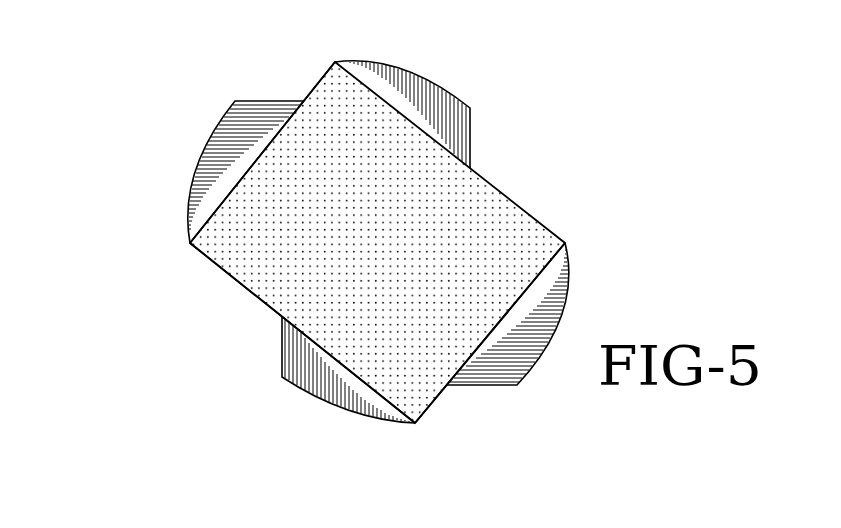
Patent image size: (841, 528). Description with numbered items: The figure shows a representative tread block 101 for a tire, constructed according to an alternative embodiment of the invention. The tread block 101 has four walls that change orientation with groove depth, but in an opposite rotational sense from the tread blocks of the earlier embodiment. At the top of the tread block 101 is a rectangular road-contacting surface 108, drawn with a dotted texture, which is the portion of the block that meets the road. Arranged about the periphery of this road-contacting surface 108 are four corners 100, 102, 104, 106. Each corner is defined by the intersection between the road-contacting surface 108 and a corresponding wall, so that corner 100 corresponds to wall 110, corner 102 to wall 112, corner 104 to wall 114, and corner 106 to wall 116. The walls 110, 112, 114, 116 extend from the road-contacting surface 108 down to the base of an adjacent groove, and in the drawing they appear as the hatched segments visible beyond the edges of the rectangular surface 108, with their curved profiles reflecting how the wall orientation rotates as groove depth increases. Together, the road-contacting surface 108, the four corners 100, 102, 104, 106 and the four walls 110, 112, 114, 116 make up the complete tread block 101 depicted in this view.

The corner 100 is at (369, 247).
The tread block 101 is at (158, 151).
The corner 102 is at (262, 302).
The corner 104 is at (312, 80).
The corner 106 is at (433, 408).
The road-contacting surface 108 is at (300, 218).
The wall 110 is at (442, 102).
The wall 112 is at (310, 382).
The wall 114 is at (232, 137).
The wall 116 is at (523, 350).